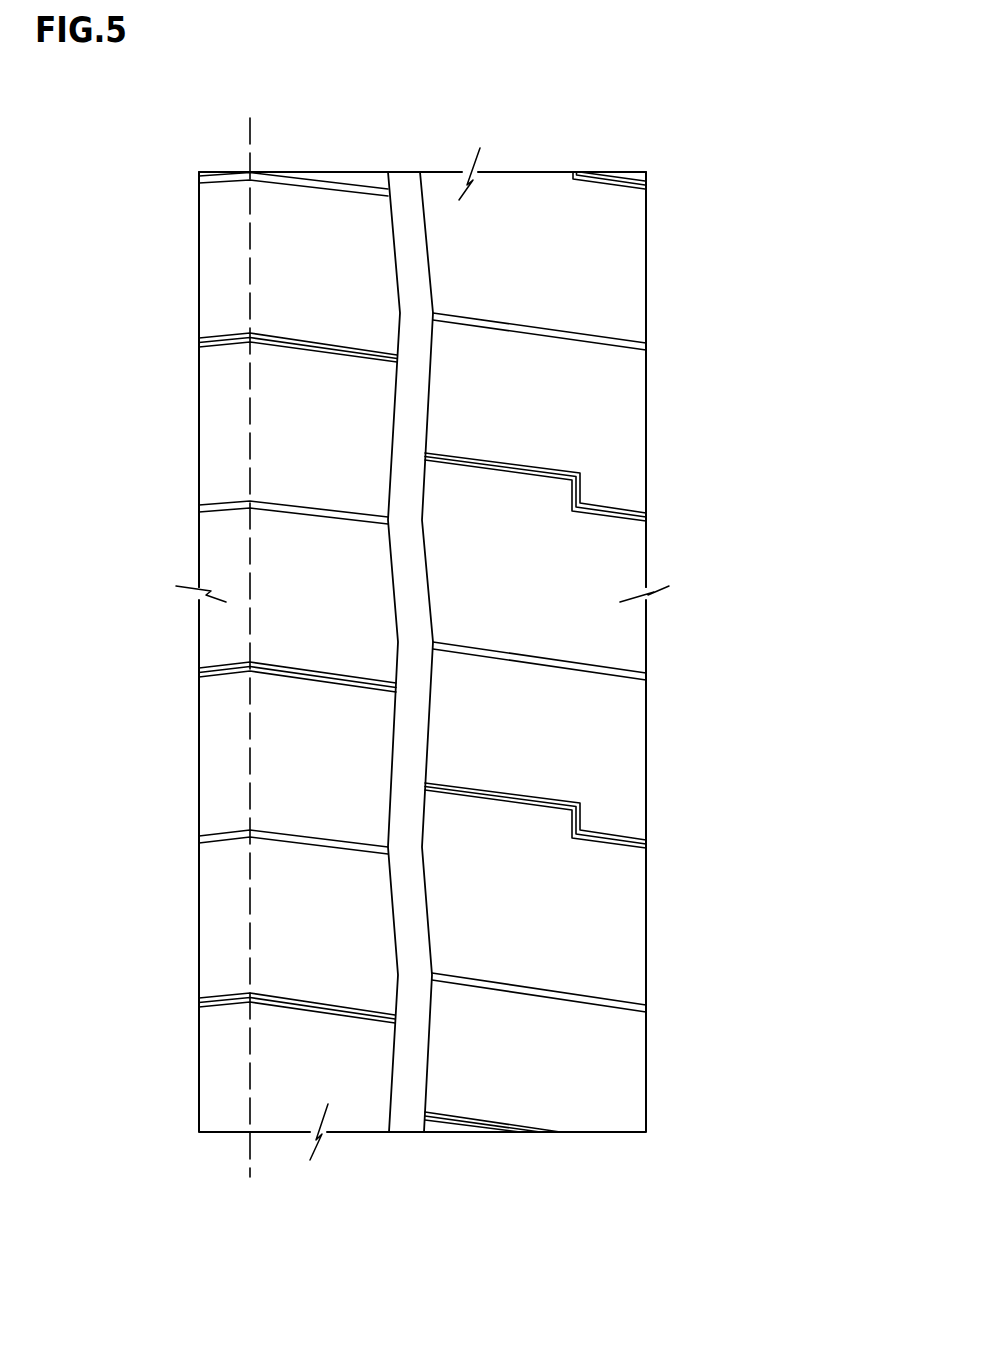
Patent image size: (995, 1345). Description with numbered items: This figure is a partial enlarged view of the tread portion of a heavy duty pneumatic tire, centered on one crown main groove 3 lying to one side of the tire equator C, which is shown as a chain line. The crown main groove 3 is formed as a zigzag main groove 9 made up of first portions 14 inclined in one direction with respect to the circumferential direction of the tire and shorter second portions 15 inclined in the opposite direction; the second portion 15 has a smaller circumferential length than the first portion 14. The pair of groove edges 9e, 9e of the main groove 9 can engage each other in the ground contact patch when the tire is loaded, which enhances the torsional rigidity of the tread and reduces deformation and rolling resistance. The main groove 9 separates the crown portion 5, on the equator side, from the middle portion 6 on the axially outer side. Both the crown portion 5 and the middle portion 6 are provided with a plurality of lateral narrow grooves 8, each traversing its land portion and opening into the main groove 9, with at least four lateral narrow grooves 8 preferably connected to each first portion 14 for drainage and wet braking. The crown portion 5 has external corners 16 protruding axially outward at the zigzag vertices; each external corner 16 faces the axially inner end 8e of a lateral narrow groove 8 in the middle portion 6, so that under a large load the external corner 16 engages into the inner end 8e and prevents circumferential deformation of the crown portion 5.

The tire equator C is at (251, 634).
The crown main groove 3 is at (421, 622).
The crown portion 5 is at (321, 207).
The middle portion 6 is at (542, 207).
The lateral narrow groove 8 is at (295, 338).
The axially inner end of lateral narrow groove 8e is at (432, 313).
The main groove 9 is at (421, 622).
The groove edge 9e is at (390, 1107).
The first portion 14 is at (407, 390).
The second portion 15 is at (410, 583).
The external corner 16 is at (400, 313).